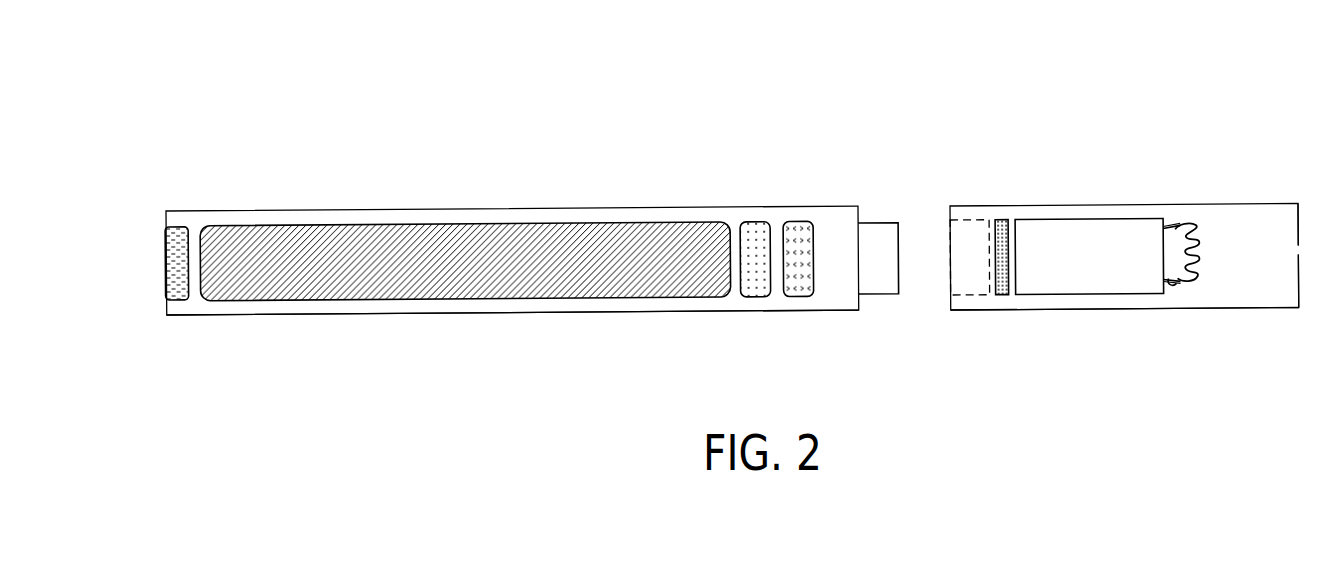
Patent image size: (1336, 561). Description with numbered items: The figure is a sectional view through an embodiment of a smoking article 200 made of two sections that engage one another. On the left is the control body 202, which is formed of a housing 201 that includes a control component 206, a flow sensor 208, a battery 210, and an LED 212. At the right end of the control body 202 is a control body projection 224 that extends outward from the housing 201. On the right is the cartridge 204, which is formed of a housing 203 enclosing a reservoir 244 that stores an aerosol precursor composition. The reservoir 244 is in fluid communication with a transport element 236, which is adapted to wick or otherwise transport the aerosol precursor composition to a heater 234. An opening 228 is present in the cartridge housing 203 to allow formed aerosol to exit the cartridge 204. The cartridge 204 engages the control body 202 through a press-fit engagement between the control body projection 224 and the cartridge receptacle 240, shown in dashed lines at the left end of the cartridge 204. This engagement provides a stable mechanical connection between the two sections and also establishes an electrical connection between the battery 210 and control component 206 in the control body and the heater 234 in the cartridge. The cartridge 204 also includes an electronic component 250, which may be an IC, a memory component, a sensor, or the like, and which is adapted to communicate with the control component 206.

The smoking article 200 is at (220, 90).
The control body 202 is at (210, 175).
The cartridge 204 is at (1015, 170).
The housing 201 is at (290, 315).
The LED 212 is at (177, 307).
The battery 210 is at (405, 300).
The control component 206 is at (758, 298).
The flow sensor 208 is at (800, 298).
The control body projection 224 is at (872, 294).
The housing 203 is at (1052, 310).
The opening 228 is at (1293, 250).
The cartridge receptacle 240 is at (962, 290).
The electronic component 250 is at (1002, 298).
The reservoir 244 is at (1110, 295).
The transport element 236 is at (1173, 290).
The heater 234 is at (1190, 282).